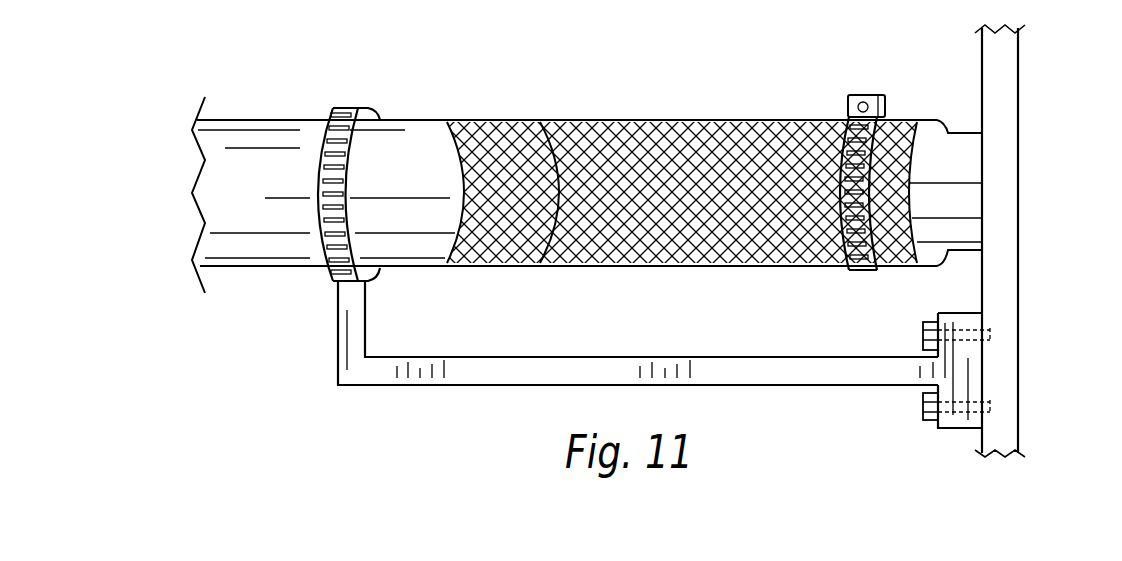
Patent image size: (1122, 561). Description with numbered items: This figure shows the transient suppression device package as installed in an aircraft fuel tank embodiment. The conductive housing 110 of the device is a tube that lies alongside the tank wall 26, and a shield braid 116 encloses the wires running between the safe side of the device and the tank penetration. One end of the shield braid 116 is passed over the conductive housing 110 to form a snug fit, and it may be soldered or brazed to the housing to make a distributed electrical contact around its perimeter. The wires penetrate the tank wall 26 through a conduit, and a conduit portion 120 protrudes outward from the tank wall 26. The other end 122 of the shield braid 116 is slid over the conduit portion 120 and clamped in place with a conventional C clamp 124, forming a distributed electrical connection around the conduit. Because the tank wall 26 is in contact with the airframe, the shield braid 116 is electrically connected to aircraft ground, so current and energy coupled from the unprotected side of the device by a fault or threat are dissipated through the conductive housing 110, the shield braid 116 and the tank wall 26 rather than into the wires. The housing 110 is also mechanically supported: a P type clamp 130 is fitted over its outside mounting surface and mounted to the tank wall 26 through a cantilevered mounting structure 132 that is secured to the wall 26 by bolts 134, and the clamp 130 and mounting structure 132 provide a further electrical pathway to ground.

The tank wall 26 is at (1017, 160).
The conductive housing 110 is at (258, 130).
The shield braid 116 is at (648, 265).
The conduit portion 120 is at (957, 135).
The other end of the shield braid 122 is at (884, 272).
The C clamp 124 is at (845, 108).
The P type clamp 130 is at (345, 110).
The cantilevered mounting structure 132 is at (487, 386).
The bolts 134 is at (921, 332).